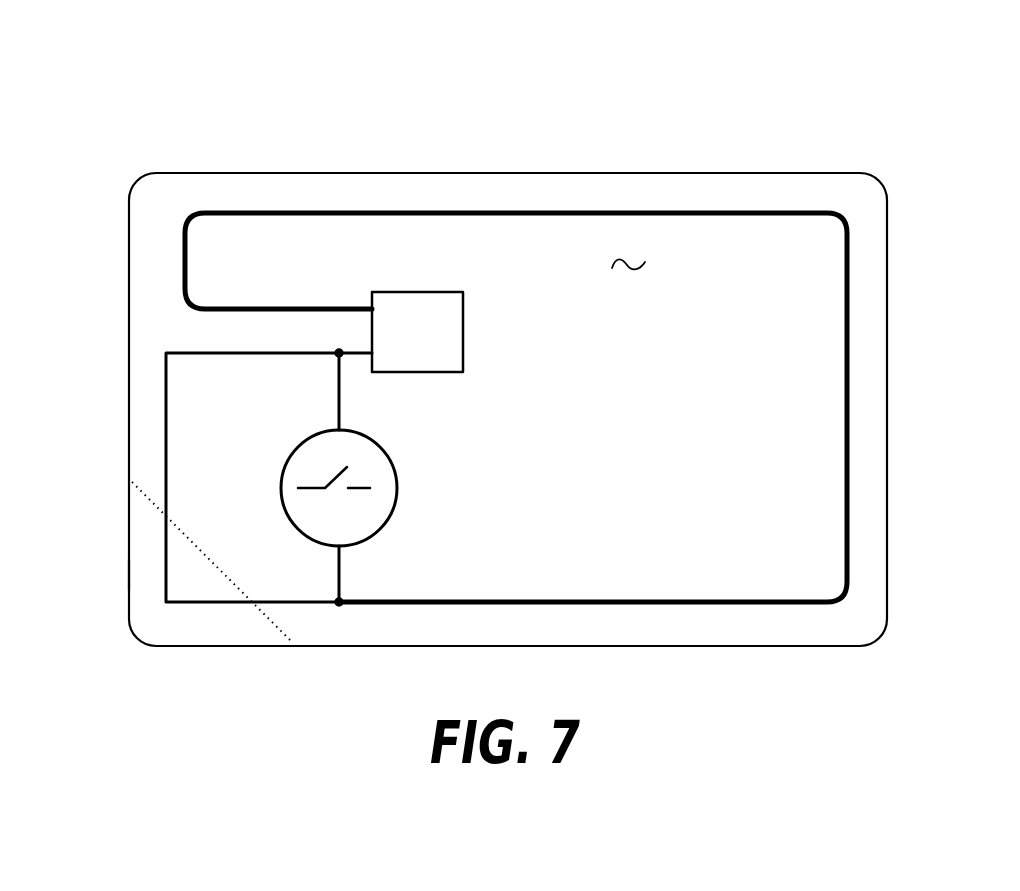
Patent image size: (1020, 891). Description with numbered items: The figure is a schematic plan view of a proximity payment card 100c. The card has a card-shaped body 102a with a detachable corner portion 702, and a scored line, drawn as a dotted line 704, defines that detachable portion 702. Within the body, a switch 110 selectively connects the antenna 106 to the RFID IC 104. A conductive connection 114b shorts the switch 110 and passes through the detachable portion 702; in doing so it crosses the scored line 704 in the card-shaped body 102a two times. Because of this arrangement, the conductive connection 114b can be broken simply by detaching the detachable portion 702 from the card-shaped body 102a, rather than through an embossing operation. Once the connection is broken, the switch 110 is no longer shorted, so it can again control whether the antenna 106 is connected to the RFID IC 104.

The proximity payment card 100c is at (458, 85).
The card-shaped body 102a is at (627, 262).
The RFID IC 104 is at (417, 292).
The antenna 106 is at (497, 213).
The switch 110 is at (281, 488).
The conductive connection 114b is at (164, 375).
The detachable corner portion 702 is at (145, 557).
The scored line 704 is at (147, 495).